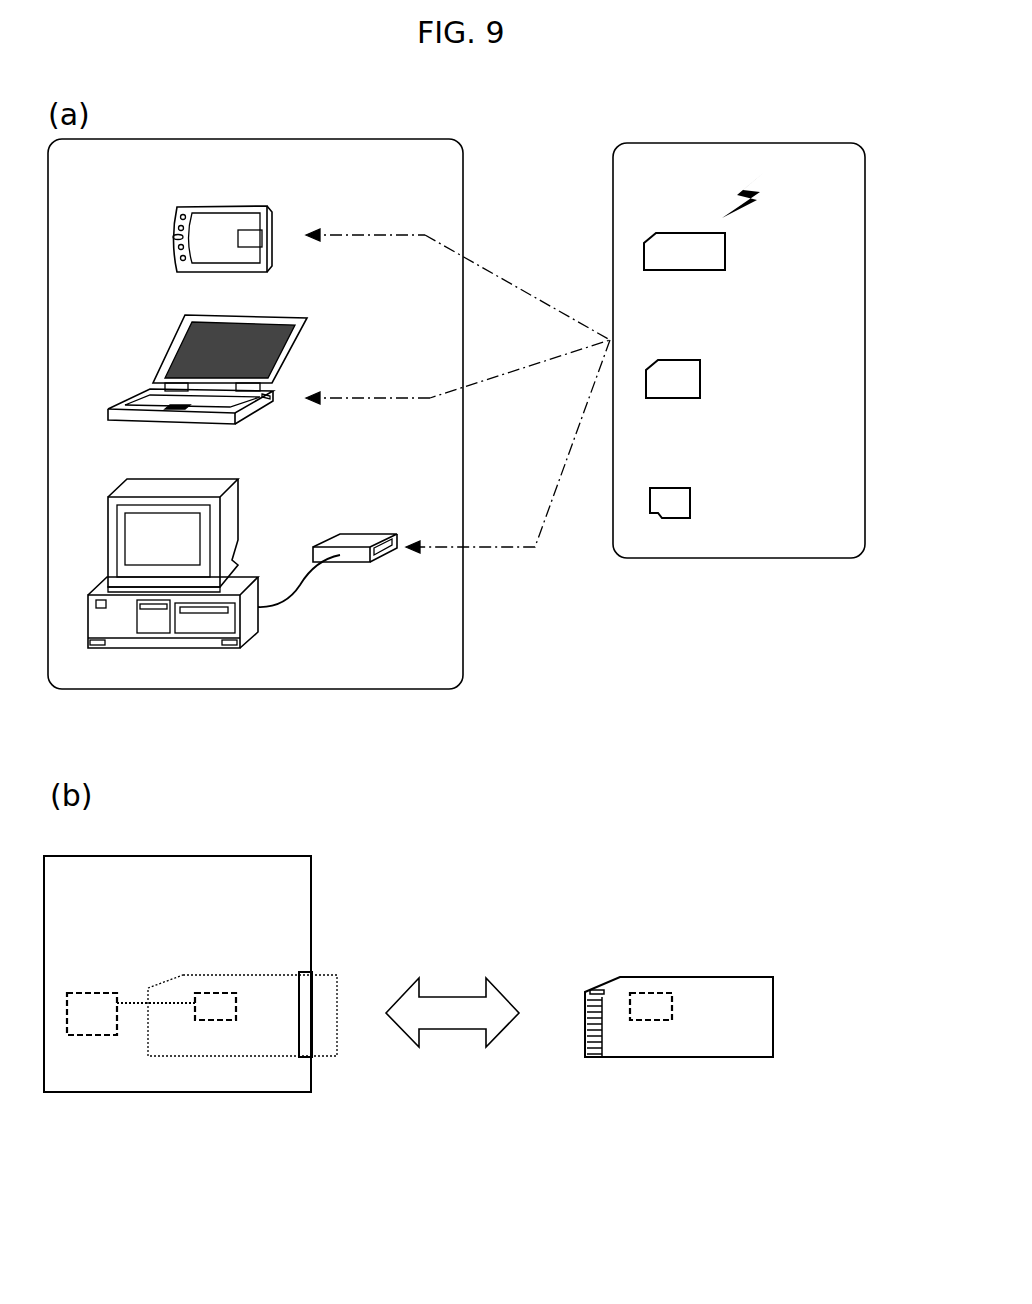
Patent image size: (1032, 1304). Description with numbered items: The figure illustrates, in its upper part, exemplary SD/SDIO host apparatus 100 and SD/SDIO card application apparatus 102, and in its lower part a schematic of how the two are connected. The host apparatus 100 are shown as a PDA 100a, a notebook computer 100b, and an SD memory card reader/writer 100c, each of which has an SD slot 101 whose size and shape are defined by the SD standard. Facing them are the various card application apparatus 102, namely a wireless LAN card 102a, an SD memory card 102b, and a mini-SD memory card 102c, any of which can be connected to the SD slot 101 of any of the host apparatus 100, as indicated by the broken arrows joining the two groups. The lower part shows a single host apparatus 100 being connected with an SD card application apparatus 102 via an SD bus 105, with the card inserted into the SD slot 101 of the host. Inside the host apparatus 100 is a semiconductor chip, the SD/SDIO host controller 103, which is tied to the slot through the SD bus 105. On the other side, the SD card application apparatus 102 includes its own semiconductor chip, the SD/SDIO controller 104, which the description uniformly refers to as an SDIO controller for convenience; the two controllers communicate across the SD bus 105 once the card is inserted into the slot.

The SD/SDIO host apparatus 100 is at (78, 690).
The PDA 100a is at (188, 205).
The notebook computer 100b is at (160, 370).
The SD memory card reader/writer 100c is at (356, 562).
The SD slot 101 is at (270, 232).
The SD/SDIO card application apparatus 102 is at (713, 975).
The wireless LAN card 102a is at (670, 232).
The SD memory card 102b is at (676, 360).
The mini-SD memory card 102c is at (678, 500).
The SD/SDIO host controller 103 is at (104, 1035).
The SD/SDIO controller 104 is at (228, 1020).
The SD bus 105 is at (136, 1003).